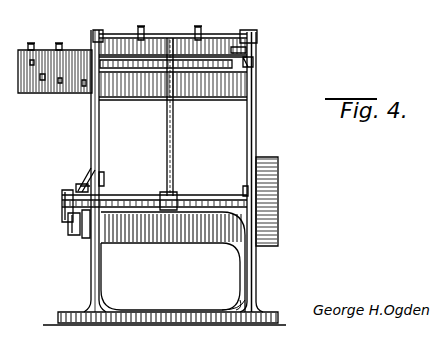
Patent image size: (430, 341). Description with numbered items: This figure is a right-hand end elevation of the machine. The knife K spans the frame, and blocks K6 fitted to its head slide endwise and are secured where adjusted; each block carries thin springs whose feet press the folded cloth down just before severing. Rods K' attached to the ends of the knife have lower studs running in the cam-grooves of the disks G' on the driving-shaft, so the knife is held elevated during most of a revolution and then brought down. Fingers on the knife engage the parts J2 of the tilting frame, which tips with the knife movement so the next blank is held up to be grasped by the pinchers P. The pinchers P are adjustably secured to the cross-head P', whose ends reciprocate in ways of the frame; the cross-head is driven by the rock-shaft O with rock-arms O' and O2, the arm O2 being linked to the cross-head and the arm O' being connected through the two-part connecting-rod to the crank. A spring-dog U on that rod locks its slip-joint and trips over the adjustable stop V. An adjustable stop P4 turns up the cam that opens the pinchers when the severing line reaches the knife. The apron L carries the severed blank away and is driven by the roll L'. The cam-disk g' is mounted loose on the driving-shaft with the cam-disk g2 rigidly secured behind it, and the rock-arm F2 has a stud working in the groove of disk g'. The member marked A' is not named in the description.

The cylinder A' is at (164, 268).
The rods K' is at (177, 171).
The apron L is at (55, 81).
The roll L' is at (54, 76).
The knife K is at (173, 61).
The blocks K6 is at (143, 29).
The parts of tilting frame J2 is at (103, 30).
The pinchers P is at (166, 86).
The adjustable stop P4 is at (252, 51).
The cross-head P' is at (258, 62).
The rock-arm O2 is at (173, 154).
The rock-shaft O is at (154, 196).
The rock-arm O' is at (63, 198).
The spring-dog U is at (68, 224).
The adjustable stop V is at (84, 238).
The cam-disk g' is at (79, 177).
The cam-disk g2 is at (85, 180).
The rock-arm F2 is at (78, 168).
The disks G' is at (188, 201).